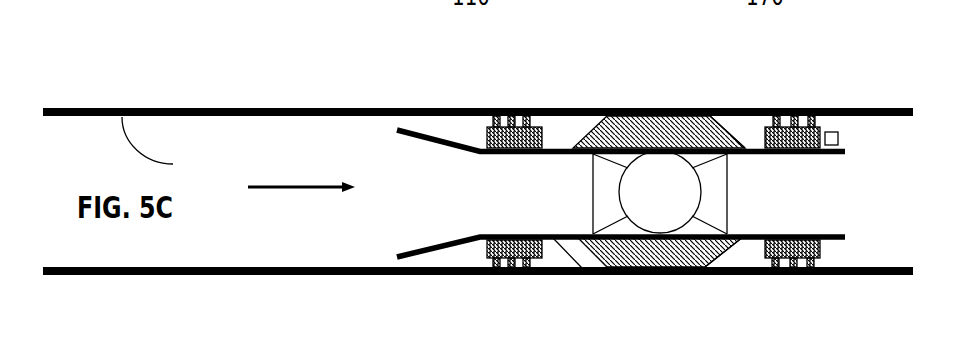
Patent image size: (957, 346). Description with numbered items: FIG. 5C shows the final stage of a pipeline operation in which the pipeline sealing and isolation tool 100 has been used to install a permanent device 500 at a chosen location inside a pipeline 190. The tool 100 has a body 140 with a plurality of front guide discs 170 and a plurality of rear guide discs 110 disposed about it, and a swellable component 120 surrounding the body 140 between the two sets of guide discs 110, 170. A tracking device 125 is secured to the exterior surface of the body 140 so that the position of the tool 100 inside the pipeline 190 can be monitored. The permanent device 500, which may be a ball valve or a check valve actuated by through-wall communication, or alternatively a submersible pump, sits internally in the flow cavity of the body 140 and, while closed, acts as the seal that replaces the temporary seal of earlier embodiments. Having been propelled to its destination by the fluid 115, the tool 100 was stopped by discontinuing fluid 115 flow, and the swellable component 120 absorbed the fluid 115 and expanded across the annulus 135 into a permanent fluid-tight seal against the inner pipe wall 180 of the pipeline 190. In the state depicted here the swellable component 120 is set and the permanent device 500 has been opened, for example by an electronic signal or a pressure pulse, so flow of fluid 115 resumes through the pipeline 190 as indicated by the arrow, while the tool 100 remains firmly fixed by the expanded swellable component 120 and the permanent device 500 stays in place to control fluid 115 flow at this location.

The pipeline sealing and isolation tool 100 is at (603, 78).
The rear guide discs 110 is at (505, 255).
The fluid 115 is at (302, 185).
The swellable component 120 is at (665, 253).
The tracking device 125 is at (825, 133).
The annulus 135 is at (738, 253).
The body 140 is at (582, 268).
The front guide discs 170 is at (808, 257).
The inner pipe wall 180 is at (171, 148).
The pipeline 190 is at (173, 110).
The permanent device 500 is at (665, 177).